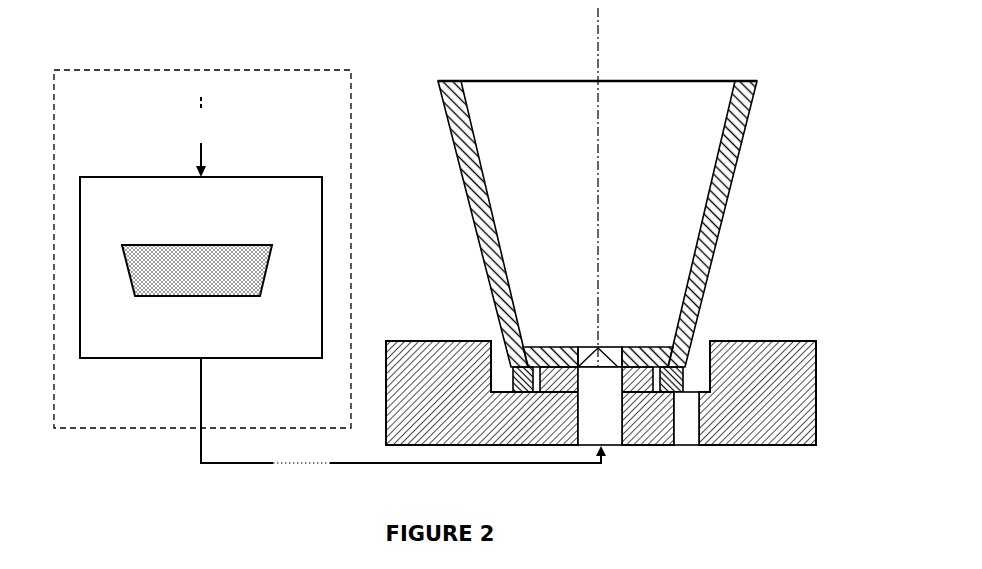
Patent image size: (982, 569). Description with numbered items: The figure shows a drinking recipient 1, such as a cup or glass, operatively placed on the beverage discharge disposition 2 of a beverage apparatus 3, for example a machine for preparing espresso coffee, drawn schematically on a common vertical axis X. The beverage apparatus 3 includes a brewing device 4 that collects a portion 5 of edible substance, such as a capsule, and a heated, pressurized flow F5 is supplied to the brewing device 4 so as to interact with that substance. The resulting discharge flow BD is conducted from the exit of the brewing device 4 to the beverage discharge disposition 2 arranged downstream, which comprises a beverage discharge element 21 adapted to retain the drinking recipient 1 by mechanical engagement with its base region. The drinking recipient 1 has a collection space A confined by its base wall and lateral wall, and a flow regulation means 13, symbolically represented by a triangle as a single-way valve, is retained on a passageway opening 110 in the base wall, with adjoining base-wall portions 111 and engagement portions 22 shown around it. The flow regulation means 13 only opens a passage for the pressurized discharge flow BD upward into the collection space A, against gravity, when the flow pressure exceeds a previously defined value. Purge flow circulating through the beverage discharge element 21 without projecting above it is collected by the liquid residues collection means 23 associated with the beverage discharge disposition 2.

The drinking recipient 1 is at (597, 208).
The beverage discharge disposition 2 is at (601, 378).
The beverage apparatus 3 is at (202, 238).
The brewing device 4 is at (201, 256).
The portion of edible substance 5 is at (197, 260).
The flow F5 is at (199, 137).
The discharge flow BD is at (403, 424).
The axis X is at (611, 226).
The collection space A is at (543, 207).
The bottom plate 111 is at (549, 338).
The passageway opening 110 is at (580, 338).
The flow regulation means 13 is at (600, 347).
The fastening element 22 is at (691, 360).
The beverage discharge element 21 is at (617, 455).
The liquid residues collection means 23 is at (681, 455).